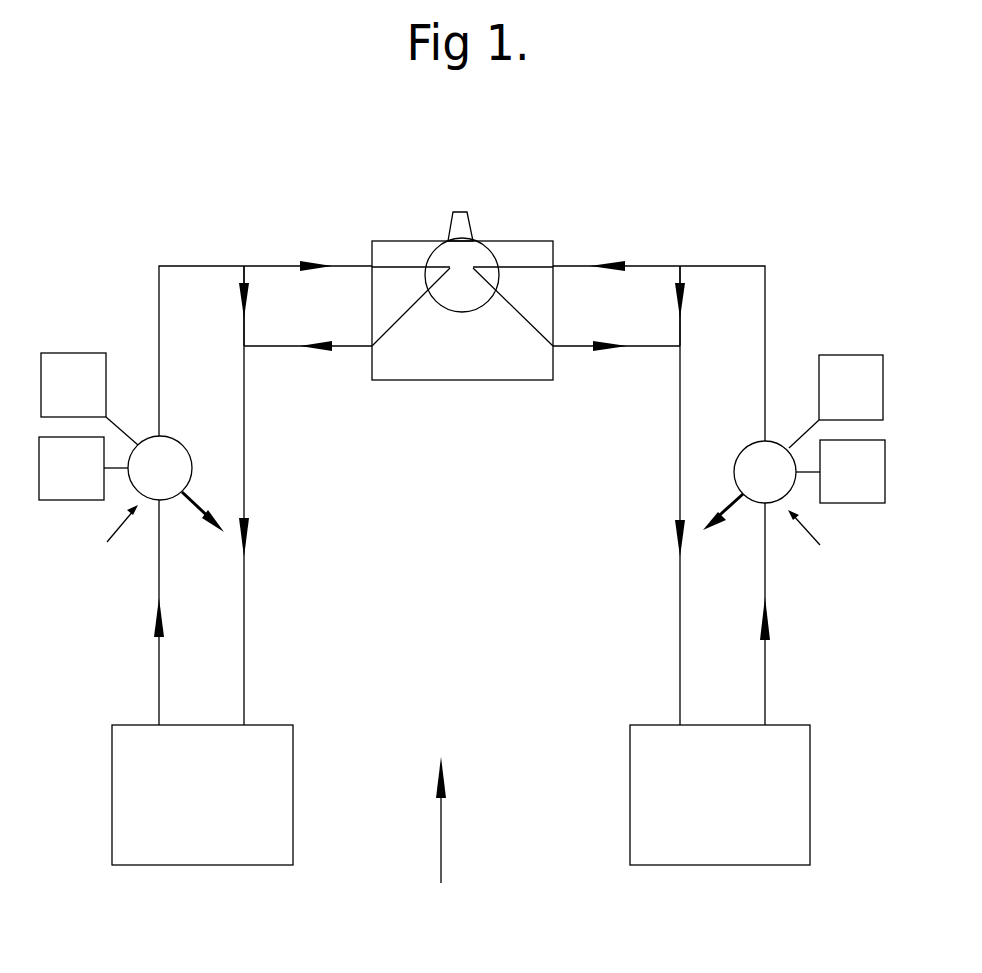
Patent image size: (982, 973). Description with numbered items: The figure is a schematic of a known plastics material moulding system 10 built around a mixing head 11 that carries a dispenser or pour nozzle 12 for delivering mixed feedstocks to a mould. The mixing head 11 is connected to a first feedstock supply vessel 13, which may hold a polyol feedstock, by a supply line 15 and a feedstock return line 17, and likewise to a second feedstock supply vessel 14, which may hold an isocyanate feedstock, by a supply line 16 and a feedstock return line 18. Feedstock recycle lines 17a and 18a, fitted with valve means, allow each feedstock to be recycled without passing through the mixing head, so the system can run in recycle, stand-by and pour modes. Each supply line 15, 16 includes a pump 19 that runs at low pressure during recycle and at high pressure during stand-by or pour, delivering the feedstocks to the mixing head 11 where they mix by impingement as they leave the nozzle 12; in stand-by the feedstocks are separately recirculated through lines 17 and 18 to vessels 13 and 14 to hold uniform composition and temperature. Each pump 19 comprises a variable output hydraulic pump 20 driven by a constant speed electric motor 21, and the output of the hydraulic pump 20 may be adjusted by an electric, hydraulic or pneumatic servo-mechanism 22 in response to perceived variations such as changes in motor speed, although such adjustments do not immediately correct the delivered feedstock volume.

The moulding system 10 is at (441, 843).
The mixing head 11 is at (443, 382).
The dispenser or pour nozzle 12 is at (472, 227).
The first feedstock supply vessel 13 is at (202, 795).
The second feedstock supply vessel 14 is at (720, 795).
The supply line 15 is at (269, 265).
The supply line 16 is at (567, 265).
The feedstock return line 17 is at (244, 433).
The feedstock recycle line 17a is at (212, 277).
The feedstock return line 18 is at (597, 400).
The feedstock recycle line 18a is at (683, 277).
The pump 19 is at (462, 542).
The variable output hydraulic pump 20 is at (462, 484).
The constant speed electric motor 21 is at (462, 470).
The servo-mechanism 22 is at (462, 400).